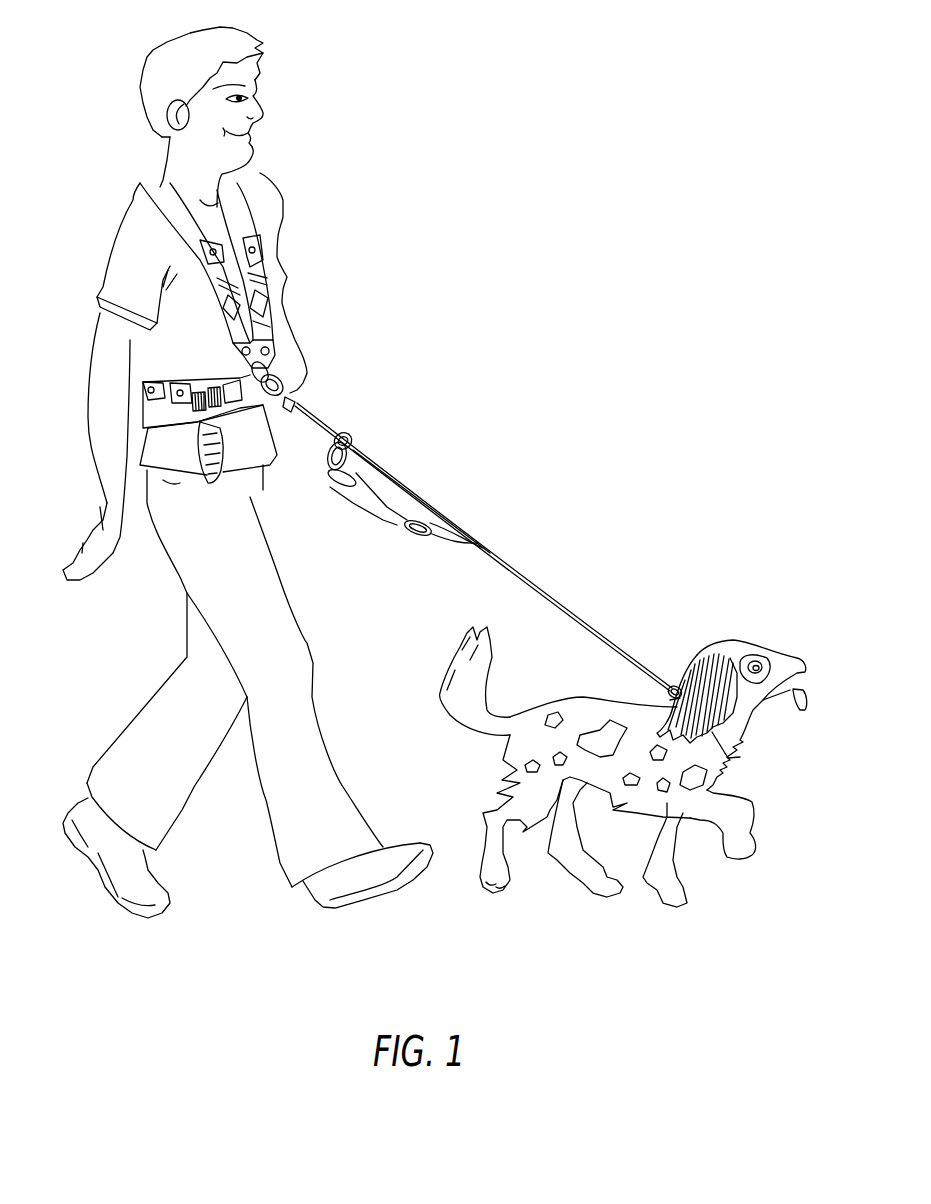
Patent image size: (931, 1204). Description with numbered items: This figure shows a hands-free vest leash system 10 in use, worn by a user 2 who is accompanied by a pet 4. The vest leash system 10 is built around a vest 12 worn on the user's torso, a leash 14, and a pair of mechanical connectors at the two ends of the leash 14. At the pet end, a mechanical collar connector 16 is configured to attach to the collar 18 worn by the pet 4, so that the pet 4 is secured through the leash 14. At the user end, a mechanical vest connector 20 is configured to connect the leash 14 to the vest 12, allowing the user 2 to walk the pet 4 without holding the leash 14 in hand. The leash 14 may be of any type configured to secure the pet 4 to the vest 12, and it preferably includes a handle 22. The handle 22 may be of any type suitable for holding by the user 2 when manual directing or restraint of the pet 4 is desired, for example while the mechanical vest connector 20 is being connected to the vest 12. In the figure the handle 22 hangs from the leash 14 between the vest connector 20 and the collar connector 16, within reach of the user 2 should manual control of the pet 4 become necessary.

The user 2 is at (293, 88).
The vest leash system 10 is at (543, 243).
The vest 12 is at (287, 278).
The mechanical vest connector 20 is at (295, 396).
The leash 14 is at (503, 562).
The handle 22 is at (365, 502).
The pet 4 is at (730, 642).
The mechanical collar connector 16 is at (672, 688).
The collar 18 is at (730, 758).